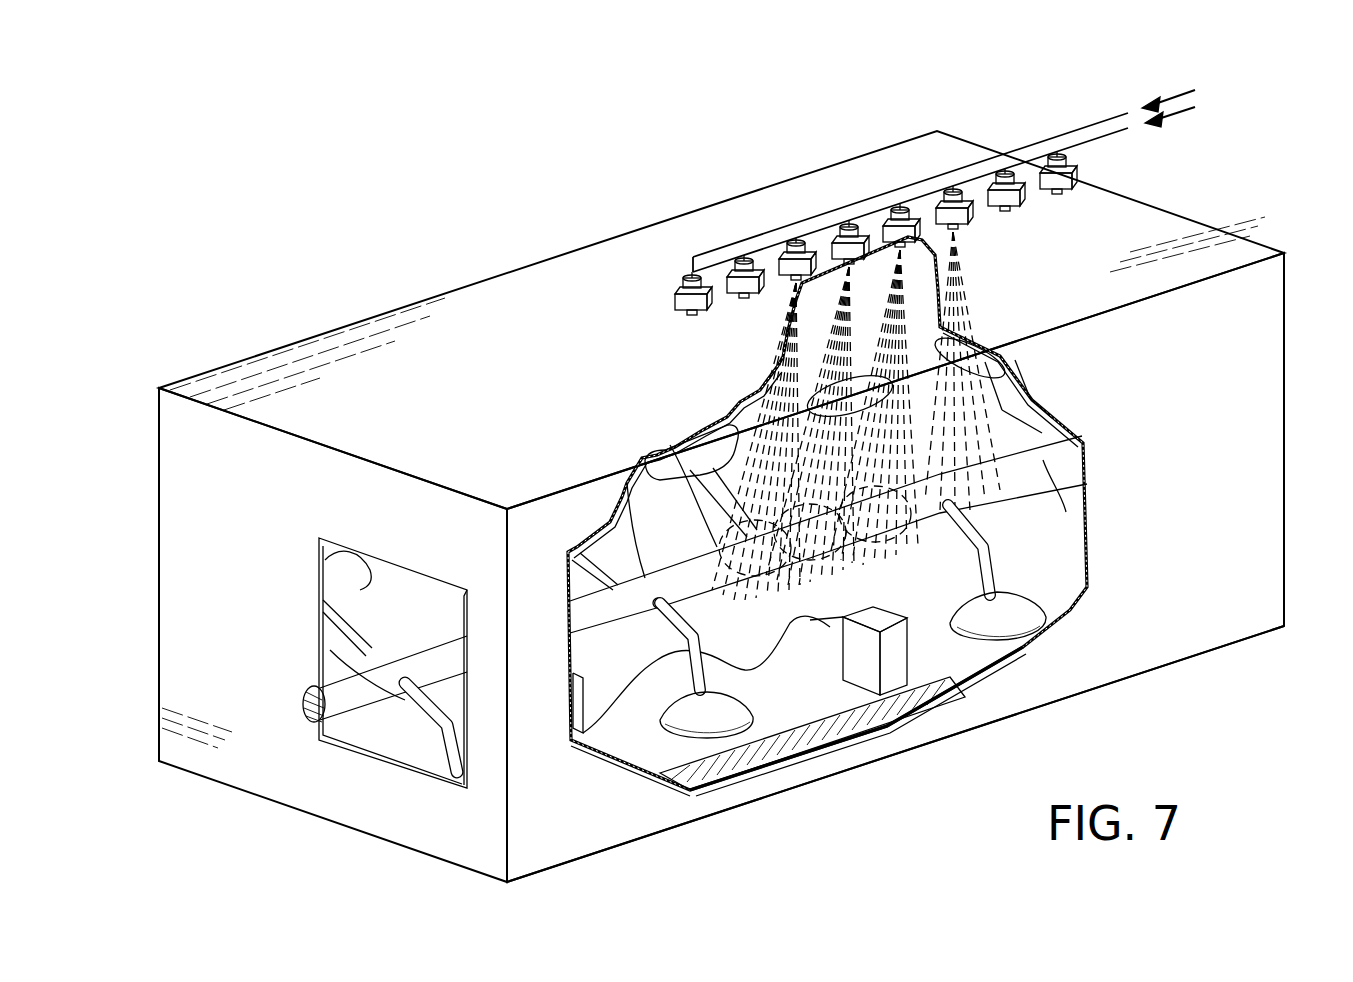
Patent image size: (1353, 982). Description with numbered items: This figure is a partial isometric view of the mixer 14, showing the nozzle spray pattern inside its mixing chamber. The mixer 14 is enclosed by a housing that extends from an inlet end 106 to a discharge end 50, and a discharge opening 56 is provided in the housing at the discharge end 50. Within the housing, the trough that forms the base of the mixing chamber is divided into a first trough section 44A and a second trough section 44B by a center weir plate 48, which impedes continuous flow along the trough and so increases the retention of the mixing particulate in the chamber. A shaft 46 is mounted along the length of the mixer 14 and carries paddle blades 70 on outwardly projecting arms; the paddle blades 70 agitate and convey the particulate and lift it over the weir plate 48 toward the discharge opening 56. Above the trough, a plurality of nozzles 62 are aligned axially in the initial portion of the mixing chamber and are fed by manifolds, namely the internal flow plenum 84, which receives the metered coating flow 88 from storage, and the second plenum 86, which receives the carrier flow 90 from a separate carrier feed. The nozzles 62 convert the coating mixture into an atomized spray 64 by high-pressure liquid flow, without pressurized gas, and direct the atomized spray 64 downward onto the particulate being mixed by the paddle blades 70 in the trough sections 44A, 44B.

The mixer 14 is at (236, 333).
The discharge end 50 is at (195, 455).
The inlet end 106 is at (1250, 345).
The shaft 46 is at (1050, 510).
The discharge opening 56 is at (433, 717).
The second plenum 86 is at (1090, 126).
The internal flow plenum 84 is at (1105, 134).
The coating flow 88 is at (1190, 111).
The carrier flow 90 is at (1188, 90).
The nozzles 62 is at (1062, 188).
The atomized spray 64 is at (822, 268).
The paddle blades 70 is at (1023, 615).
The weir plate 48 is at (912, 650).
The first trough section 44A is at (945, 705).
The second trough section 44B is at (777, 740).